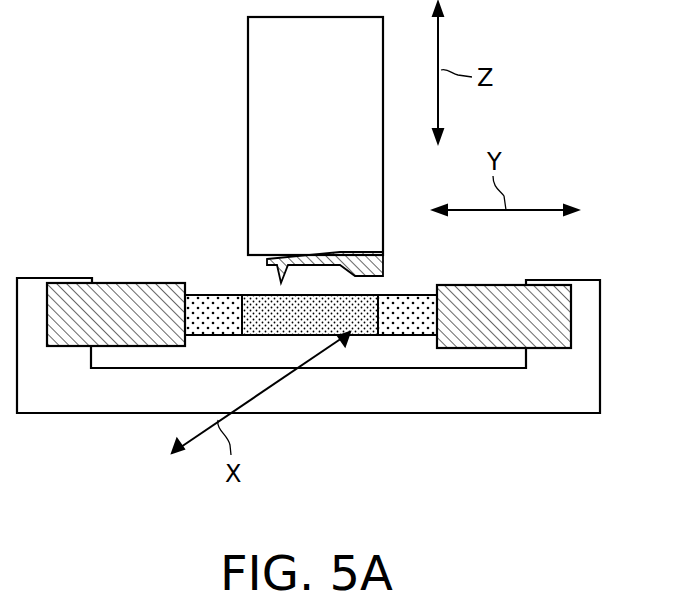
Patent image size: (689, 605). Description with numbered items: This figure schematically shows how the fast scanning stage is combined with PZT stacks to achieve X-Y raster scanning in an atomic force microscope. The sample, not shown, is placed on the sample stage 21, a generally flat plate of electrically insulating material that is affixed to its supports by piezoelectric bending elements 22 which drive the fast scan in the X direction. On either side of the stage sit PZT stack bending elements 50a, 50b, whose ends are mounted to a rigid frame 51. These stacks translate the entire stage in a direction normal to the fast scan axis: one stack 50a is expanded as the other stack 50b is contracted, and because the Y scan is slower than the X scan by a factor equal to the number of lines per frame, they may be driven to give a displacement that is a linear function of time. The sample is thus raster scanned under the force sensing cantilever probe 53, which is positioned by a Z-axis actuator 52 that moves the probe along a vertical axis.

The sample stage 21 is at (365, 336).
The piezoelectric bending elements 22 is at (192, 336).
The PZT stack bending element 50a is at (115, 285).
The PZT stack bending element 50b is at (503, 287).
The rigid frame 51 is at (68, 394).
The Z-axis actuator 52 is at (330, 216).
The force sensing cantilever probe 53 is at (267, 262).